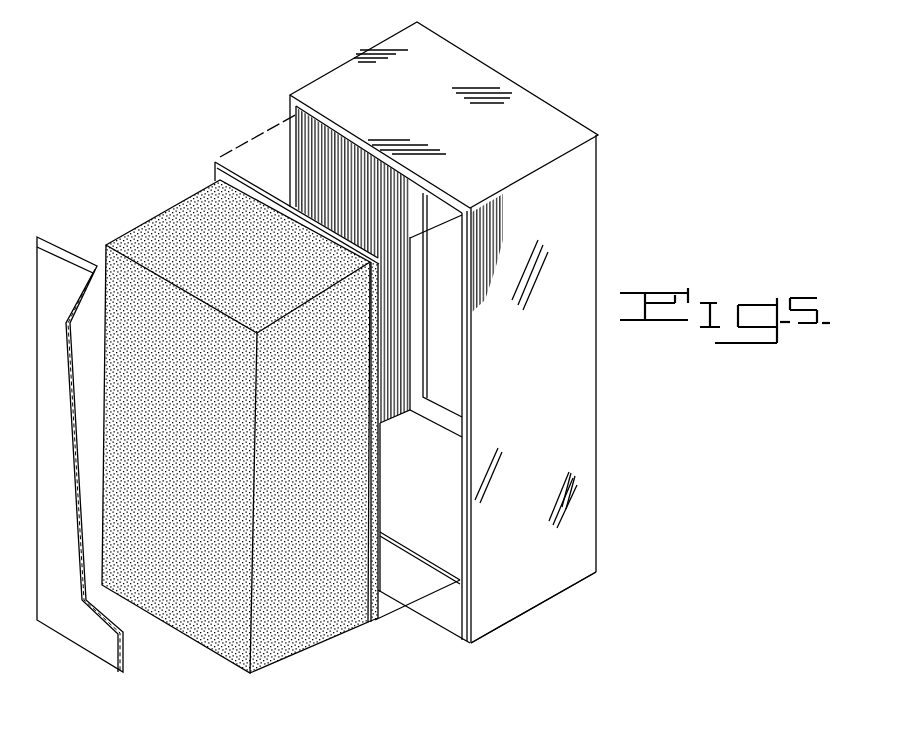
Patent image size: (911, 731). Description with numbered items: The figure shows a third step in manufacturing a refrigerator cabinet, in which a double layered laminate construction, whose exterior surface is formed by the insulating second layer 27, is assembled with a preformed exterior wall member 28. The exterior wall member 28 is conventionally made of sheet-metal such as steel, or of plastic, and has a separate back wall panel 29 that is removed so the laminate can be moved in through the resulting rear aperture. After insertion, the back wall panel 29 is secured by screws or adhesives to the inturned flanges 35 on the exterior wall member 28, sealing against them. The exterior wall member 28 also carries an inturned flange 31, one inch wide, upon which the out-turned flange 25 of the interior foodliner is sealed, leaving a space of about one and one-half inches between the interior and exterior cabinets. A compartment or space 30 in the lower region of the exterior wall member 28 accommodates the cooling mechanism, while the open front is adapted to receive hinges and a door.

The out-turned flange 25 is at (377, 612).
The second layer 27 is at (278, 655).
The exterior wall member 28 is at (553, 375).
The back wall panel 29 is at (92, 655).
The compartment or space 30 is at (567, 575).
The inturned flange 31 is at (423, 313).
The inturned flanges 35 is at (462, 501).